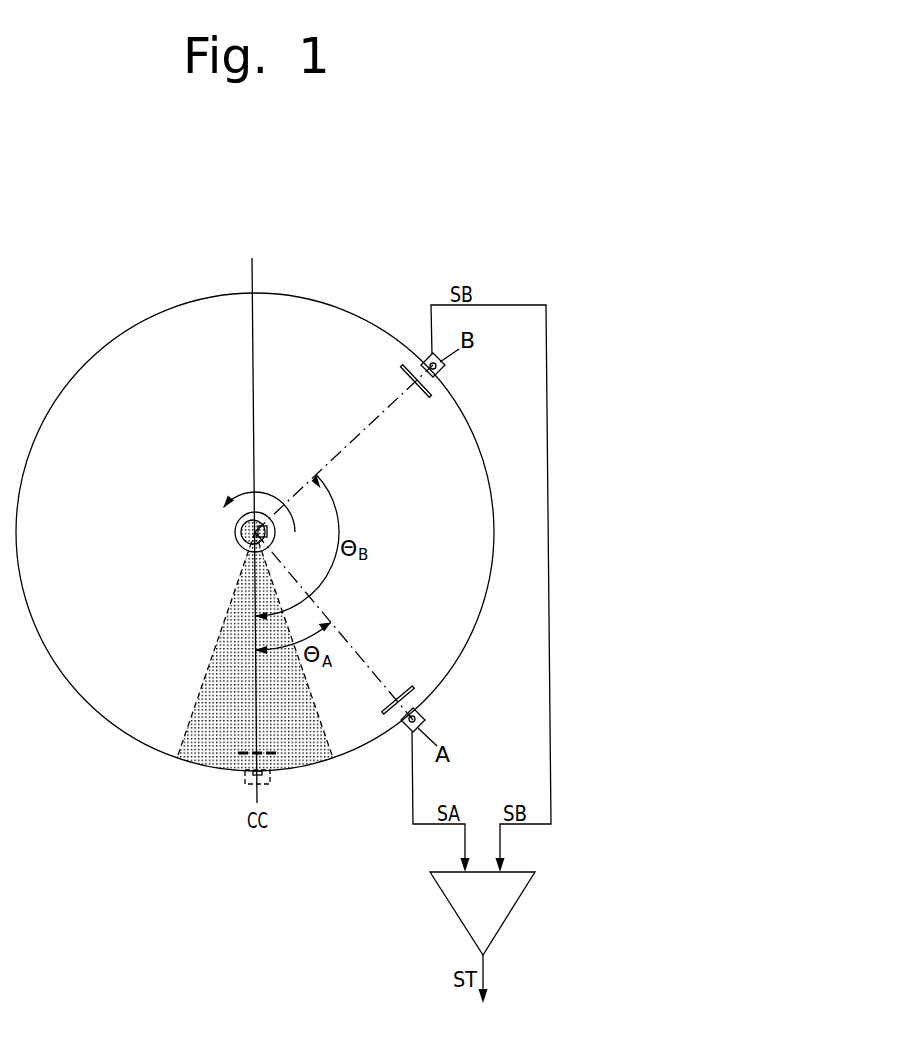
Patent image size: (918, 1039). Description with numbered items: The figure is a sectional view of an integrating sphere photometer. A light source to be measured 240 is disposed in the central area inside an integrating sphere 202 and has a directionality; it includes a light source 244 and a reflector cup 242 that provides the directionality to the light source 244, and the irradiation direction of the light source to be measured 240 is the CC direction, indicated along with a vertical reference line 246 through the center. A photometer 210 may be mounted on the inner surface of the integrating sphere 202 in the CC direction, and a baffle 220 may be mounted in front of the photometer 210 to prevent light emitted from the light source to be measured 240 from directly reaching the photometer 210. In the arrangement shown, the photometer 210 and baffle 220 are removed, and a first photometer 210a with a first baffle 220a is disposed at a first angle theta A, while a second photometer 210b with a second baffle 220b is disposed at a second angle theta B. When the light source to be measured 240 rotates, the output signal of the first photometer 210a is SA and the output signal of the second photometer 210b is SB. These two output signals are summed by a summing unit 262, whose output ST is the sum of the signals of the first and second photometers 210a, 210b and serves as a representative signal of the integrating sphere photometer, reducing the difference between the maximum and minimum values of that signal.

The integrating sphere 202 is at (320, 300).
The reference axis line 246 is at (252, 258).
The light source to be measured 240 is at (182, 539).
The reflector cup 242 is at (235, 528).
The light source 244 is at (243, 535).
The second baffle 220b is at (404, 372).
The second photometer 210b is at (447, 372).
The first baffle 220a is at (408, 690).
The first photometer 210a is at (428, 719).
The baffle 220 is at (238, 753).
The photometer 210 is at (270, 778).
The summing unit 262 is at (512, 912).